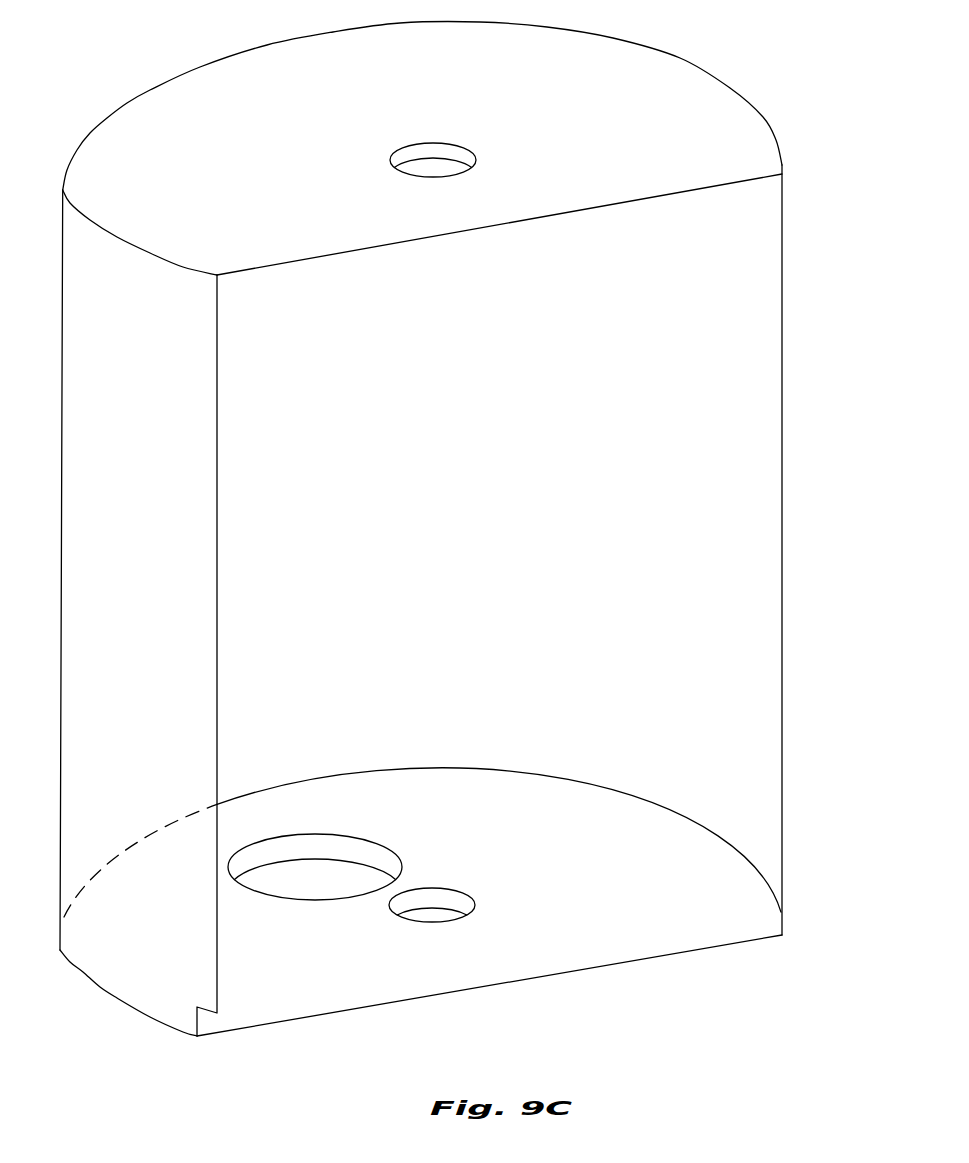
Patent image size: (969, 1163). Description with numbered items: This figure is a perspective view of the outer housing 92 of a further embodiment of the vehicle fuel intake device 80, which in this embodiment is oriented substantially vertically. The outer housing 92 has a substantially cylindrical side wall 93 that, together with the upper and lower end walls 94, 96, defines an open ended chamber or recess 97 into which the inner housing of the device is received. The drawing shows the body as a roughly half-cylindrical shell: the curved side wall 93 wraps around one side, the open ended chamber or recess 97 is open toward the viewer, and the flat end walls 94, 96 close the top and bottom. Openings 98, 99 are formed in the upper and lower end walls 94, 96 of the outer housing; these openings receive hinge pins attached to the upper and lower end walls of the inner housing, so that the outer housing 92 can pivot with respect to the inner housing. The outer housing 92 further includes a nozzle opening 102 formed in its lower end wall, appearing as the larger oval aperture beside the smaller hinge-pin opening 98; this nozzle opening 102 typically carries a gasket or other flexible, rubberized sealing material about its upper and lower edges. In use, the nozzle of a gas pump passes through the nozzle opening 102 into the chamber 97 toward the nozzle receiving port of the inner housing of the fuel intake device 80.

The fuel intake device 80 is at (776, 98).
The outer housing 92 is at (450, 1005).
The cylindrical side wall 93 is at (168, 973).
The upper end wall 94 is at (527, 985).
The lower end wall 96 is at (680, 78).
The open ended chamber or recess 97 is at (710, 457).
The opening 98 is at (432, 913).
The opening 99 is at (439, 167).
The nozzle opening 102 is at (302, 888).